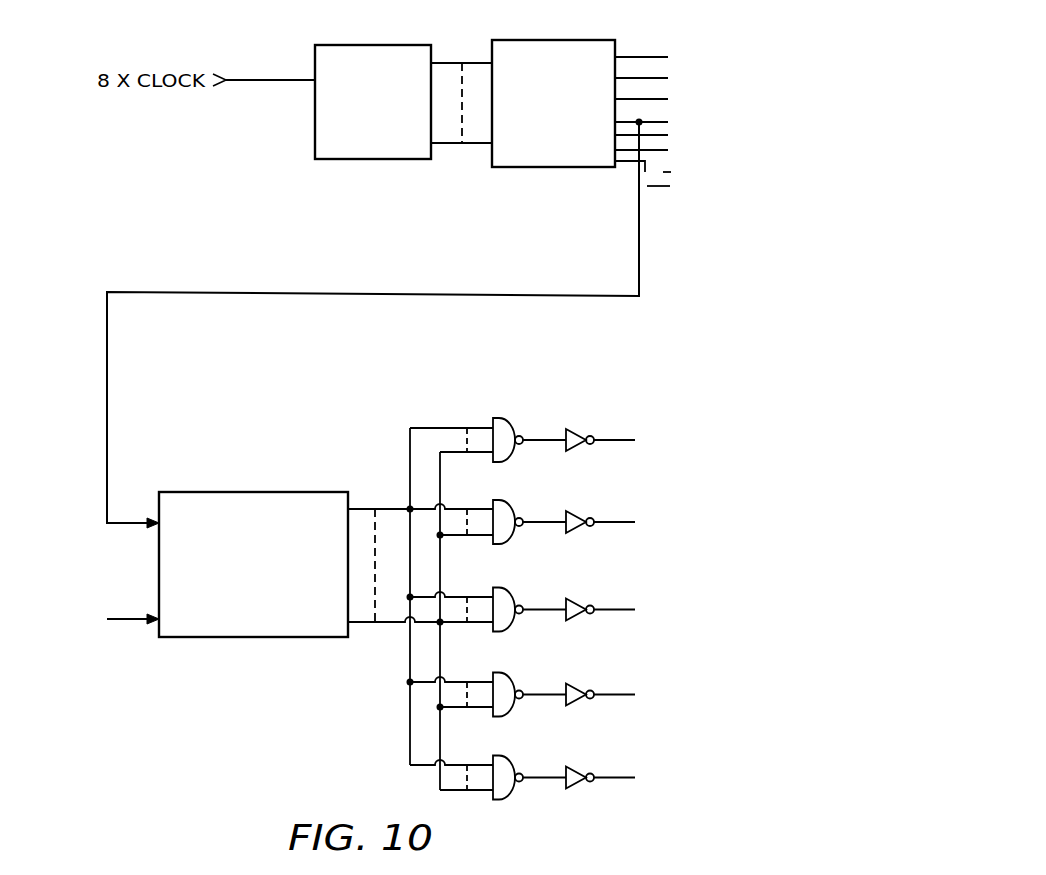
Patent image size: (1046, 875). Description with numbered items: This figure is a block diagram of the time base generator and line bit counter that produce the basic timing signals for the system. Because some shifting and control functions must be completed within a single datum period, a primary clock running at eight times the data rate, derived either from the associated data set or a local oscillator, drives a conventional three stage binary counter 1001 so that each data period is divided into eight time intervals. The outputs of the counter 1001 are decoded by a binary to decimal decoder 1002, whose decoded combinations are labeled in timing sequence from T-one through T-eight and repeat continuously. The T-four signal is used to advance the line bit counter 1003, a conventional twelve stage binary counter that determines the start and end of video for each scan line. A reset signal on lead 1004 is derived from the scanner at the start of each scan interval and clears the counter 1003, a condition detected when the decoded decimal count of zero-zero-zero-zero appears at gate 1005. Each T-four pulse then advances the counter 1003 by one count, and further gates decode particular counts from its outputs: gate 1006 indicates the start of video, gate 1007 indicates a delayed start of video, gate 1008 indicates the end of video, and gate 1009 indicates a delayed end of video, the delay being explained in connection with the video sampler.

The binary three stage counter 1001 is at (365, 45).
The binary to decimal decoder 1002 is at (553, 40).
The line bit counter 1003 is at (262, 492).
The reset lead 1004 is at (125, 620).
The gate decoding count 0000 1005 is at (507, 425).
The gate decoding count 0021 1006 is at (504, 508).
The gate decoding count 0024 1007 is at (506, 596).
The gate decoding count 2053 1008 is at (506, 680).
The gate decoding count 2056 1009 is at (504, 763).